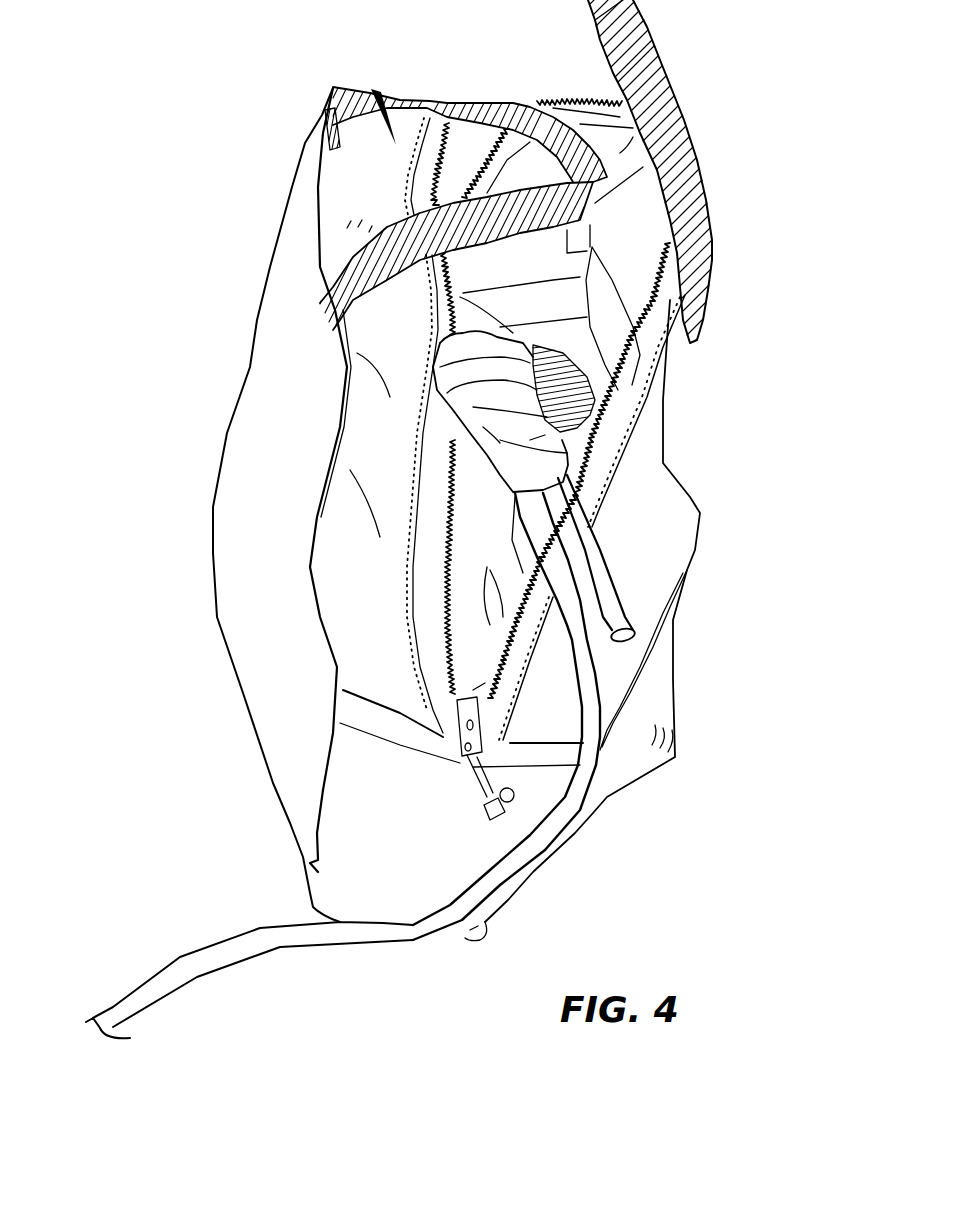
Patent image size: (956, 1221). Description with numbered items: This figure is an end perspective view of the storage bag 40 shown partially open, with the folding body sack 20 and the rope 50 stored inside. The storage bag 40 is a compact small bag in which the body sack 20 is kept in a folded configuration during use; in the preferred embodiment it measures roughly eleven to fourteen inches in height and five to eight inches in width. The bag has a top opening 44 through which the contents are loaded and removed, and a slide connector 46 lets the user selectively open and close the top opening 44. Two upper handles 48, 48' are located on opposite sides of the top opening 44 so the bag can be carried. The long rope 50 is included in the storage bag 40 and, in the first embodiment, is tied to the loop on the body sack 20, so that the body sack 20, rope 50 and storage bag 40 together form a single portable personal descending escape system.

The body sack 20 is at (590, 341).
The storage bag 40 is at (298, 193).
The top opening 44 is at (375, 92).
The slide connector 46 is at (457, 748).
The upper handle 48 is at (547, 82).
The shoulder strap 48' is at (694, 171).
The long rope 50 is at (623, 620).